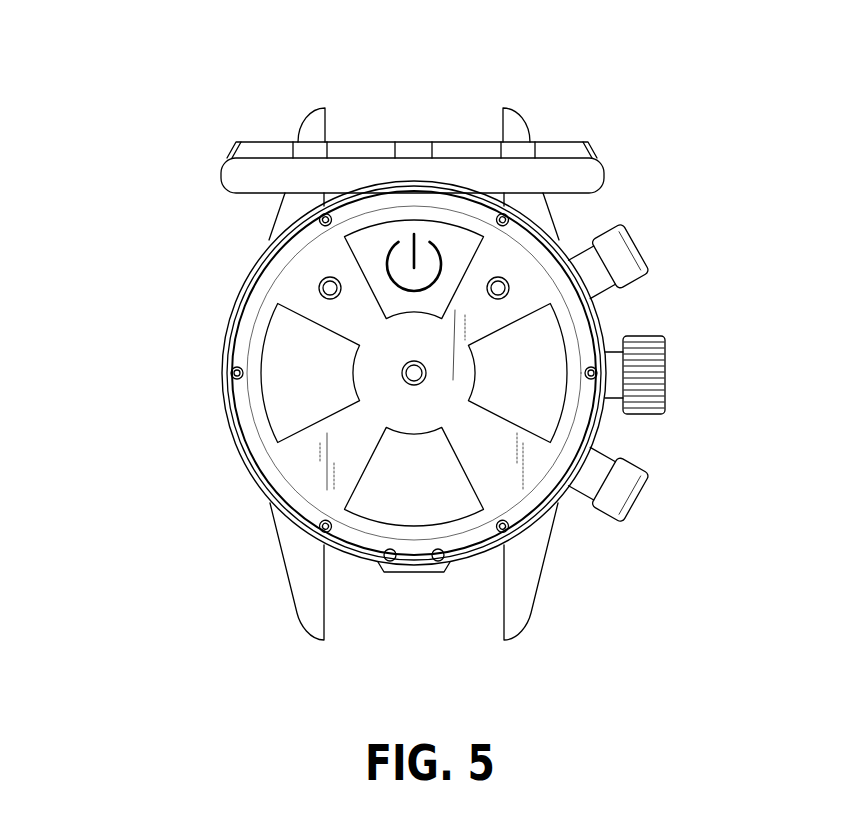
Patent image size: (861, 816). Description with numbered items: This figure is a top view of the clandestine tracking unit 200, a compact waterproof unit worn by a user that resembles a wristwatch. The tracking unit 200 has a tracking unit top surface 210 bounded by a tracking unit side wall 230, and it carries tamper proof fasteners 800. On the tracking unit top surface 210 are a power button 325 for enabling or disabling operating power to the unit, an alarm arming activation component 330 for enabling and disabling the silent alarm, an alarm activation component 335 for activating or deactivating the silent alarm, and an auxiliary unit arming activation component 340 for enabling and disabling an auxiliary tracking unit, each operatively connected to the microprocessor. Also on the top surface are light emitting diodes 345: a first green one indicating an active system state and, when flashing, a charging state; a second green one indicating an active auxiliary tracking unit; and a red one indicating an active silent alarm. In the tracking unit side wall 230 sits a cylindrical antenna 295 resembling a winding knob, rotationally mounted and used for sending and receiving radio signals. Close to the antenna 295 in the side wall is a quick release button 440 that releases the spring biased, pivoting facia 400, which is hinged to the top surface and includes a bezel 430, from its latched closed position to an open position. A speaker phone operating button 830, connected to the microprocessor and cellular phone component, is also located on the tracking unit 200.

The tracking unit 200 is at (192, 205).
The tracking unit top surface 210 is at (302, 277).
The tracking unit side wall 230 is at (243, 470).
The antenna 295 is at (650, 363).
The power button 325 is at (458, 243).
The alarm arming activation component 330 is at (538, 333).
The alarm activation component 335 is at (467, 503).
The auxiliary unit arming activation component 340 is at (273, 397).
The light emitting diode 345 is at (329, 279).
The facia 400 is at (381, 123).
The bezel 430 is at (552, 148).
The quick release button 440 is at (615, 487).
The tamper proof fasteners 800 is at (314, 530).
The speaker phone operating button 830 is at (620, 262).